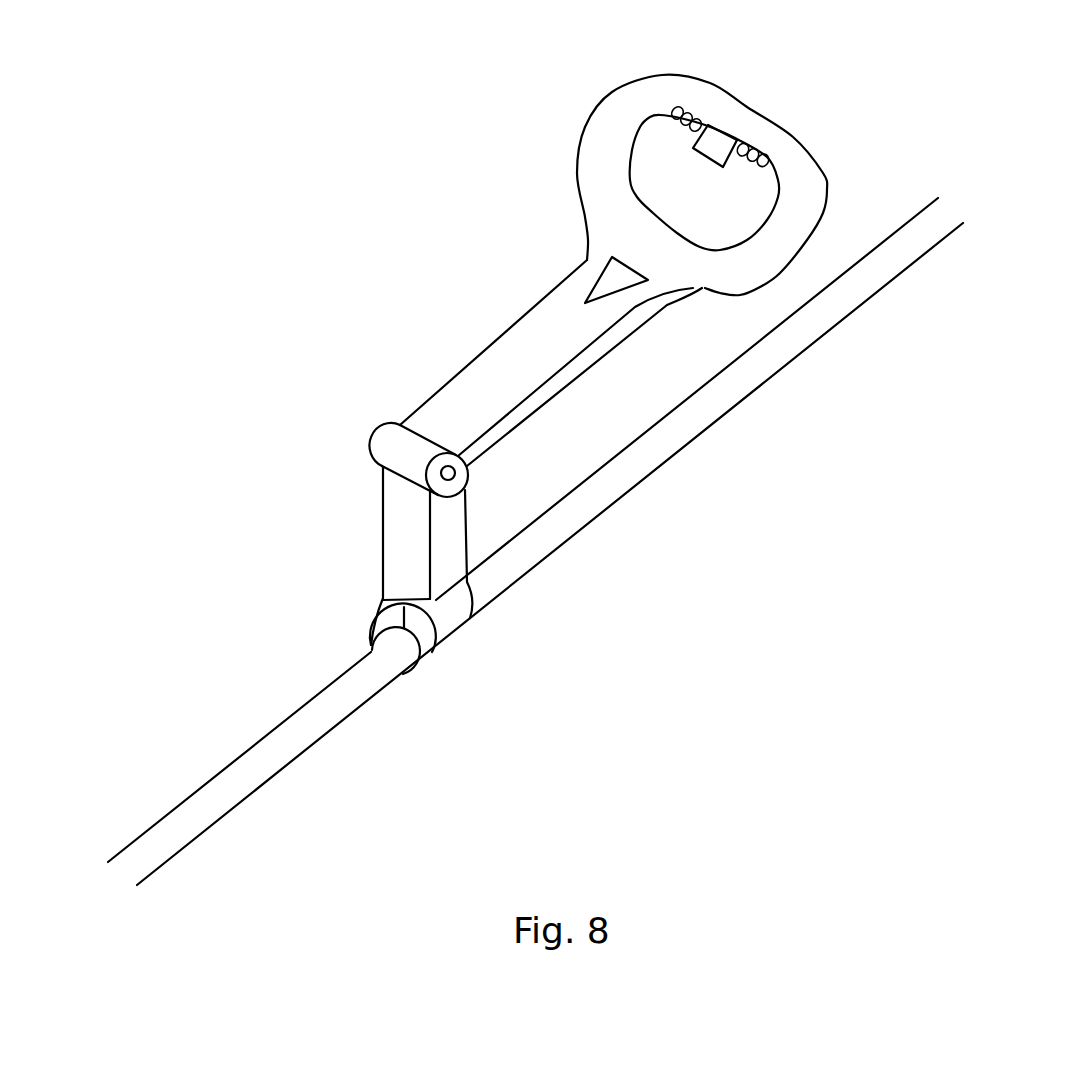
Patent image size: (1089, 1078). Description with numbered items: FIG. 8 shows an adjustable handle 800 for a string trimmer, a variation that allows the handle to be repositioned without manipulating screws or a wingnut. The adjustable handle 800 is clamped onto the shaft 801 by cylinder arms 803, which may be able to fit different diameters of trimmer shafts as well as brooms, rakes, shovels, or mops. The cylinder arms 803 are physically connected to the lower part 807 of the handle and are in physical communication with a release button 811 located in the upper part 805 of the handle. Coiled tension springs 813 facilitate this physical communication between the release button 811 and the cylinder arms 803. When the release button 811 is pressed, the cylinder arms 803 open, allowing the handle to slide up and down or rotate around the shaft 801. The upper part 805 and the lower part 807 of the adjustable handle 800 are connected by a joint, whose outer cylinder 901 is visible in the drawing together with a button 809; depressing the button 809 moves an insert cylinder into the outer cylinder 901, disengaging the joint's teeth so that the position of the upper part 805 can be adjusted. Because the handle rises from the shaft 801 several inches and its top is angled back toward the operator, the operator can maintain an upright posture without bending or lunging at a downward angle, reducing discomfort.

The adjustable handle 800 is at (1063, 80).
The shaft 801 is at (233, 807).
The cylinder arms 803 is at (457, 625).
The upper part 805 is at (710, 83).
The lower part 807 is at (382, 523).
The button 809 is at (455, 472).
The release button 811 is at (697, 138).
The coiled tension springs 813 is at (773, 152).
The outer cylinder 901 is at (393, 430).